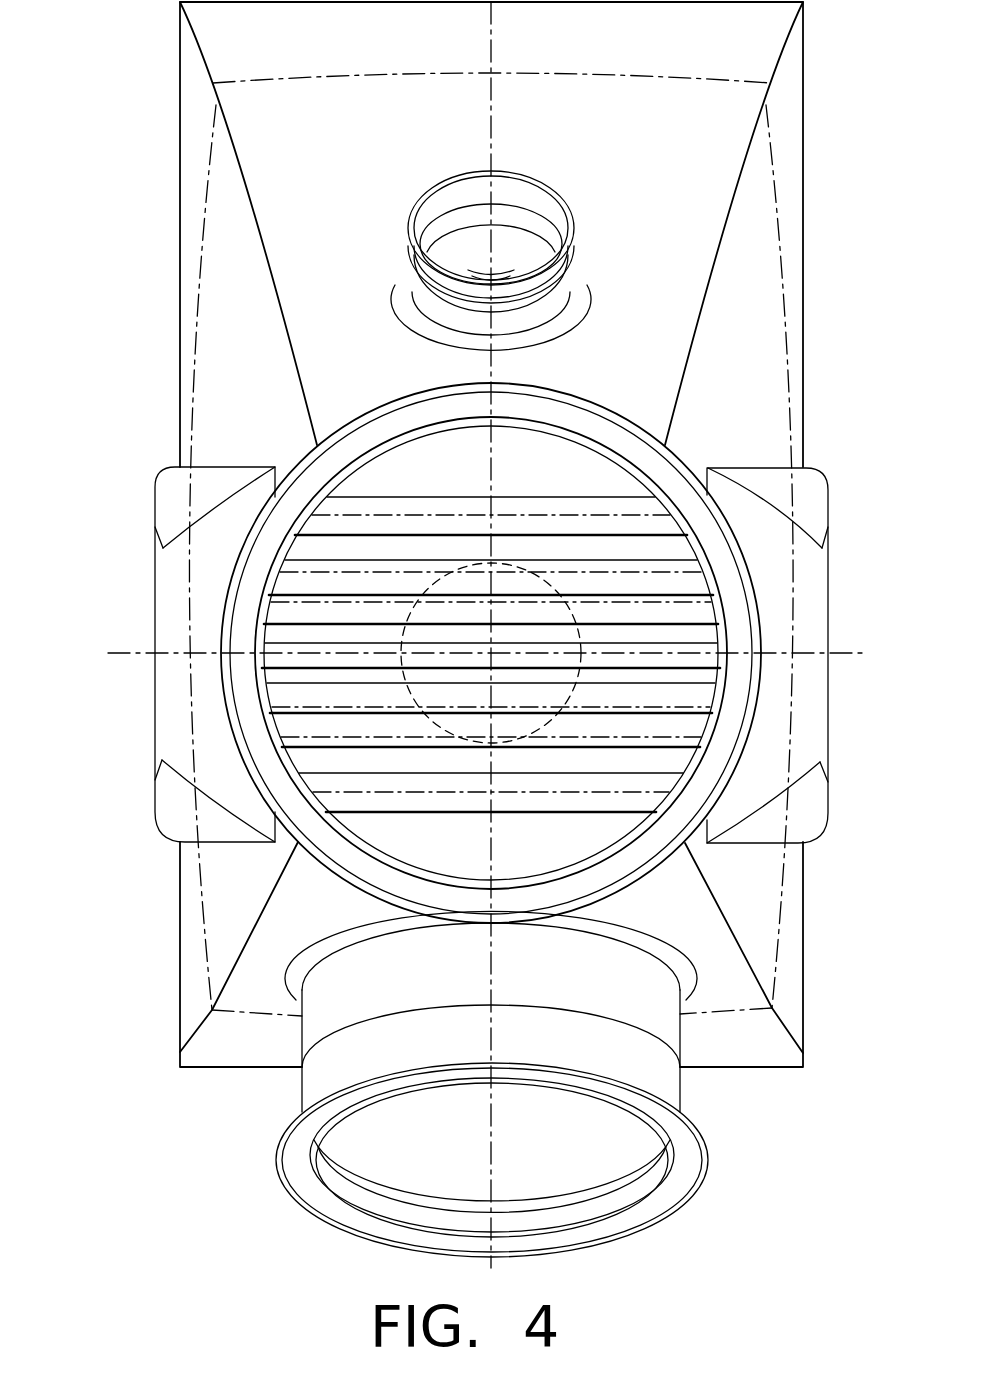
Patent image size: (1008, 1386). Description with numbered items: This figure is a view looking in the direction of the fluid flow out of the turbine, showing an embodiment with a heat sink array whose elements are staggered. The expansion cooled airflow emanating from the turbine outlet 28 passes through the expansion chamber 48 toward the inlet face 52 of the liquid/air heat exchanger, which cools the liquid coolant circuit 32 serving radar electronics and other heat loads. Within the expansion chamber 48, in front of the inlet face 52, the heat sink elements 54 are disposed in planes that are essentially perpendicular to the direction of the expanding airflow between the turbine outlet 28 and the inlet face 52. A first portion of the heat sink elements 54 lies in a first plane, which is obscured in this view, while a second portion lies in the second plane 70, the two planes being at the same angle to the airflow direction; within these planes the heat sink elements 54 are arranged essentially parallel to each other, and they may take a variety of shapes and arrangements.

The turbine outlet 28 is at (250, 722).
The liquid coolant circuit 32 is at (192, 563).
The expansion chamber 48 is at (700, 228).
The inlet face 52 is at (547, 462).
The heat sink elements 54 is at (665, 525).
The second plane 70 is at (138, 655).